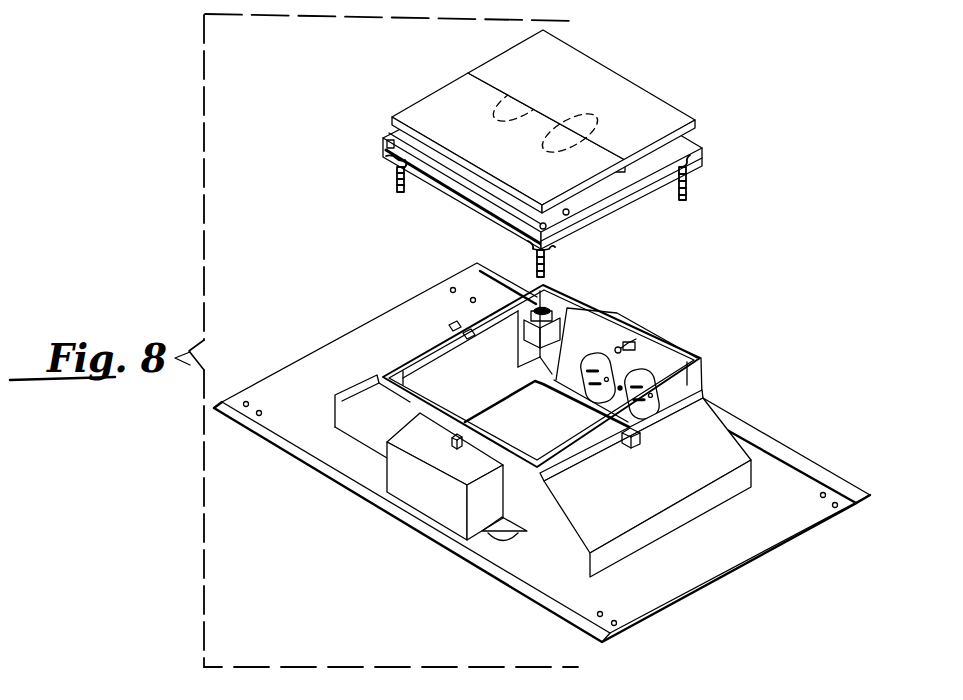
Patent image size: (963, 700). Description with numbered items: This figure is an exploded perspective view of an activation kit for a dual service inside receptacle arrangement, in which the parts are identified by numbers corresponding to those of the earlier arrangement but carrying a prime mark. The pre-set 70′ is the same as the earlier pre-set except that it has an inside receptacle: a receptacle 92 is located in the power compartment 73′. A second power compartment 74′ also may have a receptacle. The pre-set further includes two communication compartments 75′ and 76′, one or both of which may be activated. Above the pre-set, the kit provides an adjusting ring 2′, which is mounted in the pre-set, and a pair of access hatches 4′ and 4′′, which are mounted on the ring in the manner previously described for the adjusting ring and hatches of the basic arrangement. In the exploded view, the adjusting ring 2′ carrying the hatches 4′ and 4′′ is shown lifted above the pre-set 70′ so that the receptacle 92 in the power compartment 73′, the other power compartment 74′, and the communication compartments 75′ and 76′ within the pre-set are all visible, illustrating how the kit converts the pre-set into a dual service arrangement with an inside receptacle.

The adjusting ring 2′ is at (370, 148).
The access hatch 4′ is at (470, 104).
The access hatch 4′′ is at (608, 92).
The pre-set 70′ is at (735, 366).
The power compartment 73′ is at (625, 322).
The power compartment 74′ is at (418, 483).
The communication compartment 75′ is at (627, 507).
The communication compartment 76′ is at (367, 383).
The receptacle 92 is at (637, 368).